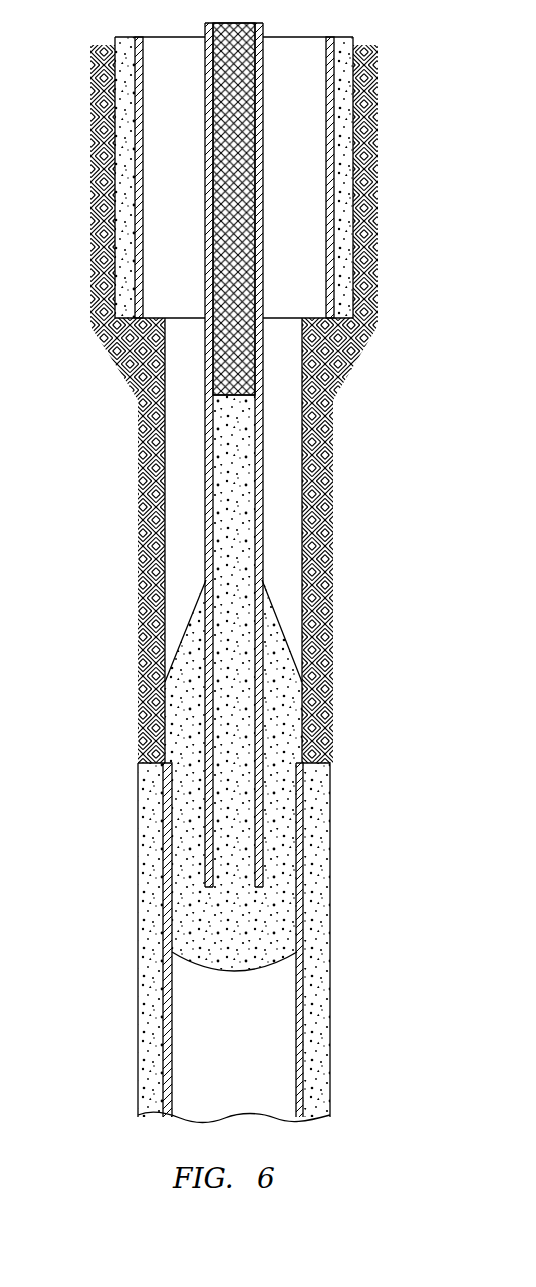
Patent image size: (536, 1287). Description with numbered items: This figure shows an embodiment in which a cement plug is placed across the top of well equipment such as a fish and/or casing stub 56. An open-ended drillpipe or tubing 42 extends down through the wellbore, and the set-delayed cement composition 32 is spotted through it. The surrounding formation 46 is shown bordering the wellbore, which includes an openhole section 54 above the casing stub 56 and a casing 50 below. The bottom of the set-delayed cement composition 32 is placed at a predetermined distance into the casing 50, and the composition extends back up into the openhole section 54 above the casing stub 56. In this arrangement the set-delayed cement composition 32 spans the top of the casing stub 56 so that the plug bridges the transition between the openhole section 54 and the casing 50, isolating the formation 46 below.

The set-delayed cement composition 32 is at (278, 700).
The drillpipe or tubing 42 is at (264, 428).
The formation 46 is at (86, 521).
The casing 50 is at (305, 800).
The openhole section 54 is at (158, 697).
The casing stub 56 is at (318, 745).